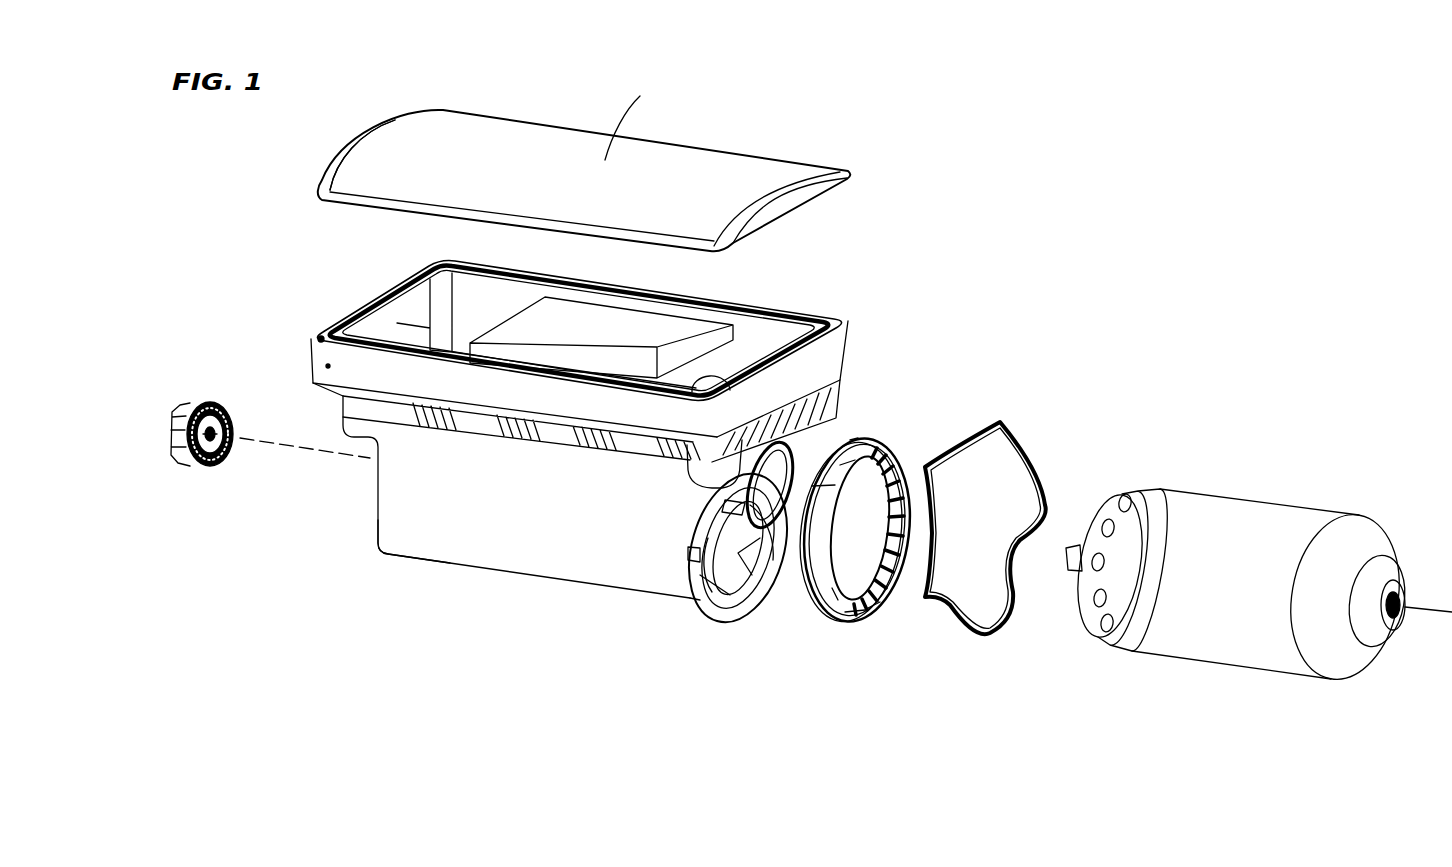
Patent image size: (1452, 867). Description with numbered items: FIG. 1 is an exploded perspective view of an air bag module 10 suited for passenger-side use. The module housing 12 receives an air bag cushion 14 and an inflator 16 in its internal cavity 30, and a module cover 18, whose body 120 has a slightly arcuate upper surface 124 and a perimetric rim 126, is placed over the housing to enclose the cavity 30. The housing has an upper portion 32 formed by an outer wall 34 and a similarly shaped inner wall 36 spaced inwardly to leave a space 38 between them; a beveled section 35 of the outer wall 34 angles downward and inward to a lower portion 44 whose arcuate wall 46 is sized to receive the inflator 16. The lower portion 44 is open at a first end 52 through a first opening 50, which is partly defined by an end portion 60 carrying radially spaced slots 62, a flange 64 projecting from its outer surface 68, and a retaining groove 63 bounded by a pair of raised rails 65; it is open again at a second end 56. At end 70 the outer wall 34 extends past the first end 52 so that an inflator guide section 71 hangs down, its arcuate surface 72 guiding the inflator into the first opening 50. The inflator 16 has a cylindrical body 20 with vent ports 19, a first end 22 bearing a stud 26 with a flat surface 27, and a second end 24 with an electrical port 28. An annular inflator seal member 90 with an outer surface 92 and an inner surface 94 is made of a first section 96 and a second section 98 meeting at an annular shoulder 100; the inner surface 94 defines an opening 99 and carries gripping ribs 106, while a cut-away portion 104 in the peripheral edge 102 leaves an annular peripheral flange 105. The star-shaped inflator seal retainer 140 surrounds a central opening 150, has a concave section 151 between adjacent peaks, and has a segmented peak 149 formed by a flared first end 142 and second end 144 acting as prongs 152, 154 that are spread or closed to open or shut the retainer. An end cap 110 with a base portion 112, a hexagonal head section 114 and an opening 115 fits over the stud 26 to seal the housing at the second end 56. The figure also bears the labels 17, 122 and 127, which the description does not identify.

The air bag module 10 is at (735, 125).
The module housing 12 is at (585, 429).
The air bag cushion 14 is at (596, 343).
The inflator 16 is at (1245, 573).
The motor body 17 is at (1222, 538).
The module cover 18 is at (521, 112).
The vent ports 19 is at (1110, 522).
The cylindrical body 20 is at (1212, 670).
The first end 22 is at (1066, 556).
The second end 24 is at (1393, 575).
The stud 26 is at (1072, 540).
The flat surface 27 is at (1081, 545).
The electrical port 28 is at (1405, 614).
The internal cavity 30 is at (393, 320).
The upper portion 32 is at (385, 385).
The outer wall 34 is at (327, 366).
The beveled section 35 is at (745, 380).
The inner wall 36 is at (780, 312).
The space 38 is at (321, 338).
The lower portion 44 is at (420, 503).
The arcuate wall 46 is at (790, 518).
The first opening 50 is at (695, 572).
The first end 52 is at (738, 617).
The second end 56 is at (377, 530).
The end portion 60 is at (719, 615).
The slots 62 is at (765, 478).
The retaining groove 63 is at (760, 540).
The flange 64 is at (690, 608).
The raised rails 65 is at (728, 602).
The outer surface 68 is at (693, 538).
The end 70 is at (818, 356).
The inflator guide section 71 is at (850, 383).
The arcuate surface 72 is at (786, 442).
The inflator seal member 90 is at (858, 538).
The outer surface 92 is at (838, 598).
The inner surface 94 is at (900, 482).
The first section 96 is at (880, 448).
The second section 98 is at (853, 445).
The opening 99 is at (868, 559).
The annular shoulder 100 is at (858, 620).
The peripheral edge 102 is at (813, 590).
The cut-away portion 104 is at (845, 468).
The annular peripheral flange 105 is at (820, 486).
The ribs 106 is at (891, 575).
The end cap 110 is at (186, 467).
The base portion 112 is at (208, 449).
The head section 114 is at (175, 428).
The opening 115 is at (232, 433).
The body 120 is at (795, 217).
The lid end edge 122 is at (820, 173).
The upper surface 124 is at (639, 117).
The perimetric rim 126 is at (325, 200).
The gasket 127 is at (770, 326).
The inflator seal retainer 140 is at (999, 547).
The first end 142 is at (1015, 600).
The second end 144 is at (1022, 570).
The segmented peak 149 is at (1003, 575).
The central opening 150 is at (991, 506).
The concave section 151 is at (1010, 473).
The prong 152 is at (1012, 592).
The prong 154 is at (1018, 565).